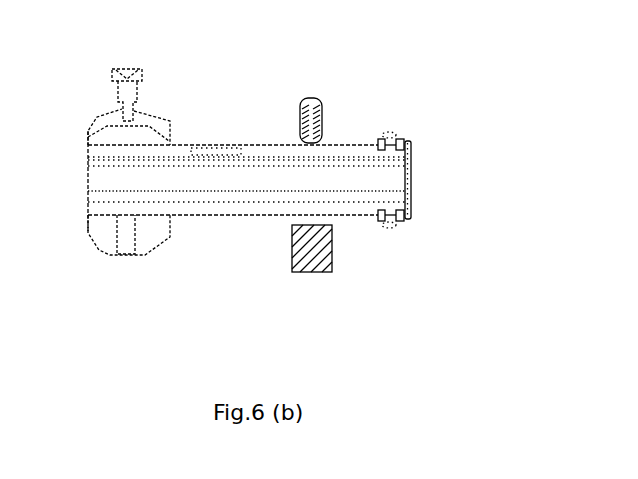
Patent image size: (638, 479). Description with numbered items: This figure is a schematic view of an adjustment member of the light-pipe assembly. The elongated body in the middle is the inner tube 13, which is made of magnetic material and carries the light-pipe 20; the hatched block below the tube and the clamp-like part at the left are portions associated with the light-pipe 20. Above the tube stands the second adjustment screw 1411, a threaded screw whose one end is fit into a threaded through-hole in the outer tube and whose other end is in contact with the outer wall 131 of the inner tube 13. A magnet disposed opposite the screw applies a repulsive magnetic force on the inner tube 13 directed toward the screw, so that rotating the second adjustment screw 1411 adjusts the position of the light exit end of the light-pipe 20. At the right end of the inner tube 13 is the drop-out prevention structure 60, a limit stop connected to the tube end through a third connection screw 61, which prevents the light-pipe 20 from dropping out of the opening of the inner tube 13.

The inner tube 13 is at (258, 150).
The light-pipe 20 is at (206, 193).
The outer wall 131 is at (356, 147).
The second adjustment screw 1411 is at (310, 97).
The drop-out prevention structure 60 is at (409, 182).
The third connection screw 61 is at (400, 138).